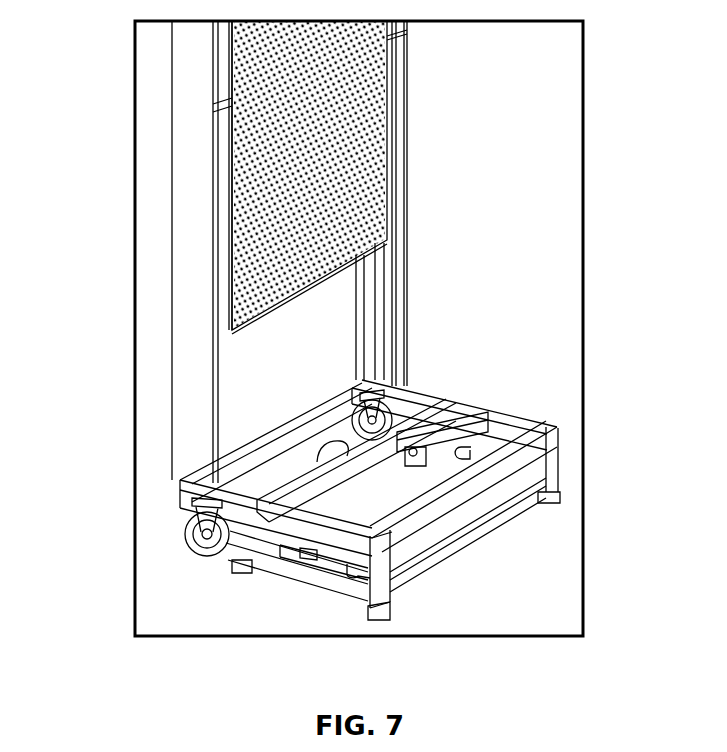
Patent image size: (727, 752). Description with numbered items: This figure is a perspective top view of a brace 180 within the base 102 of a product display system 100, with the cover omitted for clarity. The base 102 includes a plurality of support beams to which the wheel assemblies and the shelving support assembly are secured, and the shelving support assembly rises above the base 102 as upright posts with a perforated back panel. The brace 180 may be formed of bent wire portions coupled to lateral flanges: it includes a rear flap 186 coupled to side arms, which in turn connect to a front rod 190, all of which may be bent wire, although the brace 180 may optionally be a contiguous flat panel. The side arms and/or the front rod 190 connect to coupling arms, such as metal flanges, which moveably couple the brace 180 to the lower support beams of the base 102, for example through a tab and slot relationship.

The product display system 100 is at (158, 108).
The base 102 is at (361, 512).
The brace 180 is at (380, 588).
The rear flap 186 is at (290, 470).
The front rod 190 is at (503, 503).